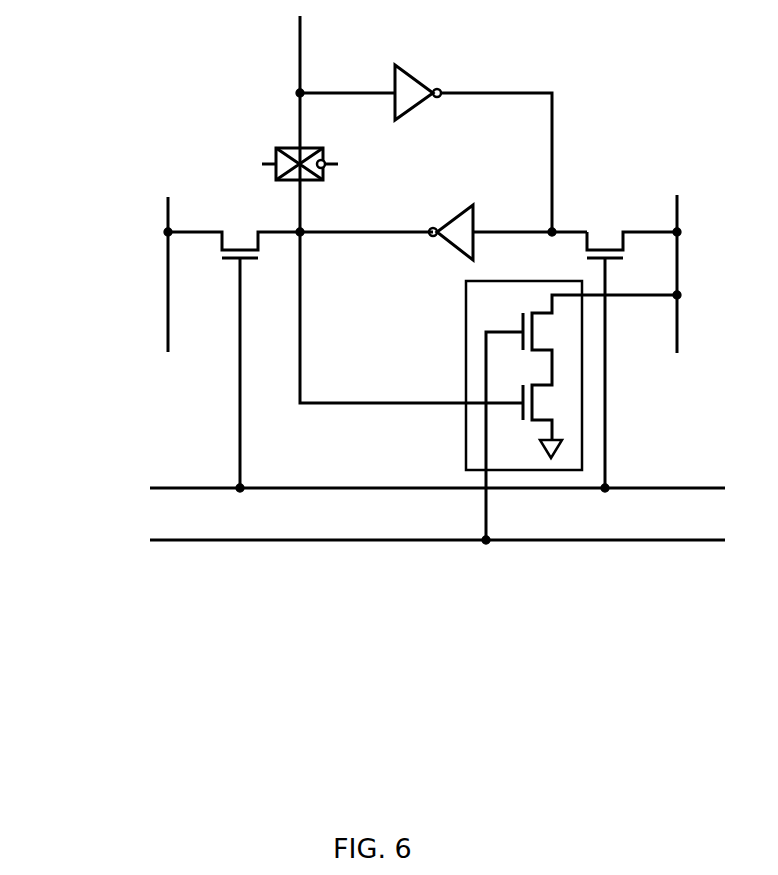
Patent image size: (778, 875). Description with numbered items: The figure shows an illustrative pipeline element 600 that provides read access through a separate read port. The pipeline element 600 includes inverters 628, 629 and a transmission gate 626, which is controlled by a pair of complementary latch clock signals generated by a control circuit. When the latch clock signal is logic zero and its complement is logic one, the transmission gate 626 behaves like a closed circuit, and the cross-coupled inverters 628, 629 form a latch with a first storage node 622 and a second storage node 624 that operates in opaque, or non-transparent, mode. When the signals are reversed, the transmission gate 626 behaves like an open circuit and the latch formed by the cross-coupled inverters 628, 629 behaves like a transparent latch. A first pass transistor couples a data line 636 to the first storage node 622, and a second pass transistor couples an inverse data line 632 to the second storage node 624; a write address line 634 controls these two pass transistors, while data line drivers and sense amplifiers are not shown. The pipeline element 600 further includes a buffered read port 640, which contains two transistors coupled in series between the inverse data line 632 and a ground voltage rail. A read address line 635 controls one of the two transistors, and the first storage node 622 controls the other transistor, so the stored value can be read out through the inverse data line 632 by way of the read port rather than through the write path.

The pipeline element 600 is at (139, 65).
The first storage node 622 is at (303, 204).
The second storage node 624 is at (551, 165).
The transmission gate 626 is at (284, 146).
The inverter 628 is at (394, 80).
The inverter 629 is at (461, 252).
The inverse data line 632 is at (676, 211).
The write address line 634 is at (690, 487).
The read address line 635 is at (421, 543).
The data line 636 is at (171, 205).
The buffered read port 640 is at (465, 331).